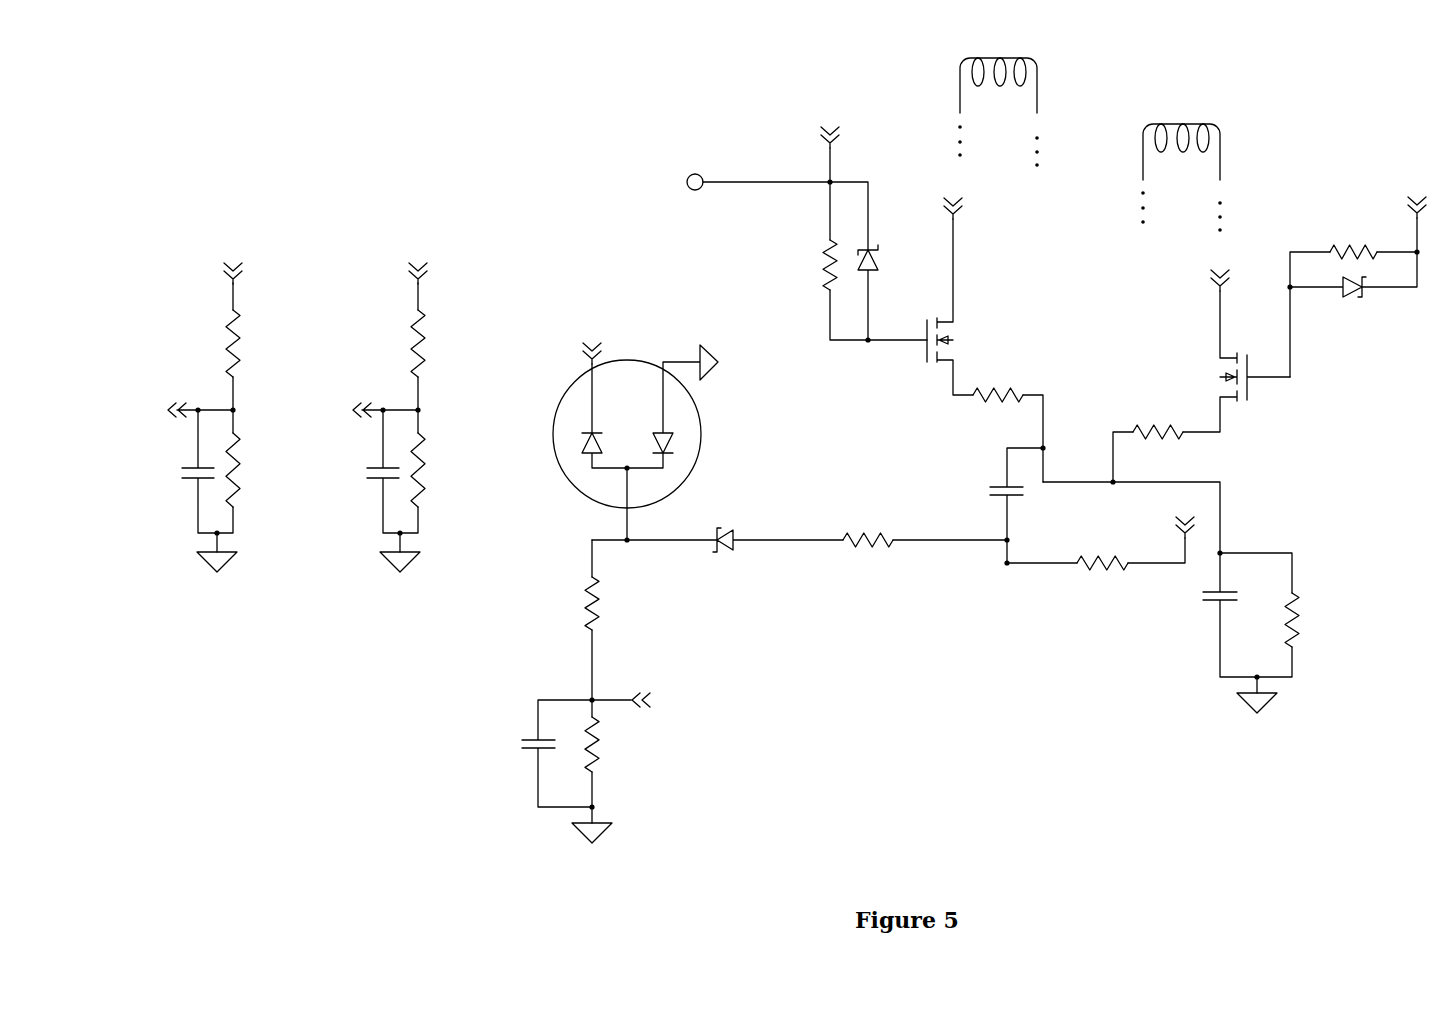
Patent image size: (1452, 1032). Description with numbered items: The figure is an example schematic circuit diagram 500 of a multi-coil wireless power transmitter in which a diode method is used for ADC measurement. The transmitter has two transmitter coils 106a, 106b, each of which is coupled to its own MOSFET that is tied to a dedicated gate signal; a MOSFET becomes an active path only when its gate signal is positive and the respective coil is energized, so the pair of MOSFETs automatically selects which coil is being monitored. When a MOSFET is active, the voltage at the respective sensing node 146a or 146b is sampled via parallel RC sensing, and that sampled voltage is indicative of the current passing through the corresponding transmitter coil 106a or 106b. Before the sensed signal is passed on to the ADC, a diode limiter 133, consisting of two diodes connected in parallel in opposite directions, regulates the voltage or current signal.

The schematic circuit diagram 500 is at (610, 65).
The transmitter coil 106a is at (998, 94).
The transmitter coil 106b is at (1181, 161).
The node 146a is at (1015, 213).
The node 146b is at (1213, 283).
The diode limiter 133 is at (753, 370).